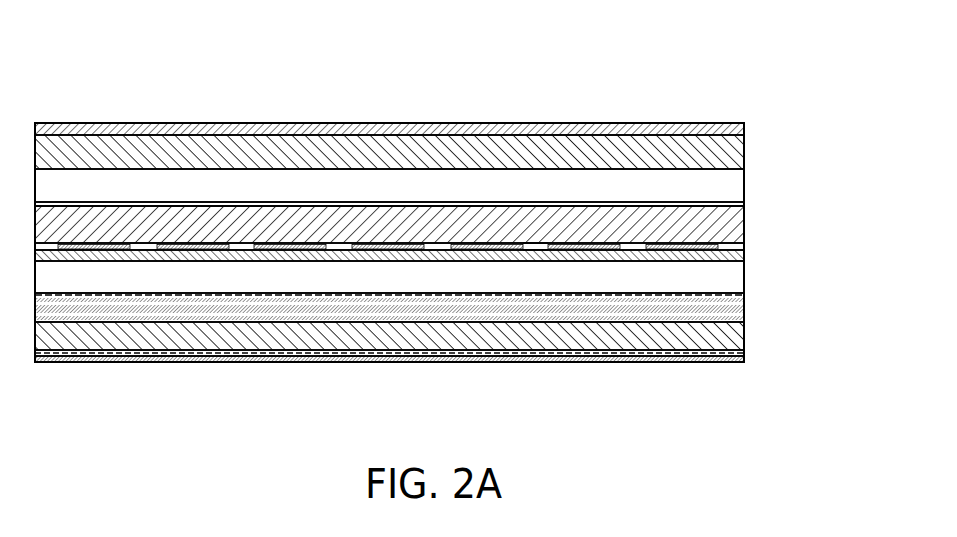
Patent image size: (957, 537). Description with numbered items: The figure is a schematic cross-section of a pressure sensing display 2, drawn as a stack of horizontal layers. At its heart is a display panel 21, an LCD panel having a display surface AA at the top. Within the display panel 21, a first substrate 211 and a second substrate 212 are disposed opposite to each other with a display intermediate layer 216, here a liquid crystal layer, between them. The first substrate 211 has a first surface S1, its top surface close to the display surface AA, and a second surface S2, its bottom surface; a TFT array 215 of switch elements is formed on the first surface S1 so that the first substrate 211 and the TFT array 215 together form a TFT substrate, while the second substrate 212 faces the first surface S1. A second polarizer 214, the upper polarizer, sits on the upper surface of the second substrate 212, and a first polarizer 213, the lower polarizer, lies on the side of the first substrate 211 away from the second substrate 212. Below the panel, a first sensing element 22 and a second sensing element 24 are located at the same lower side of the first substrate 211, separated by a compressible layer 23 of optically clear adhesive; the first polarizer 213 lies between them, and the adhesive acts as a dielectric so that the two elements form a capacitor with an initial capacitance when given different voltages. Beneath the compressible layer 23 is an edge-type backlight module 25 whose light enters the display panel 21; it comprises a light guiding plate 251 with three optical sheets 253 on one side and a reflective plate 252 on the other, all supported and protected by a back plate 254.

The pressure sensing display 2 is at (150, 57).
The display panel 21 is at (810, 110).
The second polarizer 214 is at (744, 128).
The second substrate 212 is at (744, 153).
The display intermediate layer 216 is at (727, 182).
The TFT array 215 is at (744, 205).
The first substrate 211 is at (736, 226).
The first polarizer 213 is at (744, 255).
The first sensing element 22 is at (483, 250).
The first surface S1 is at (491, 207).
The second surface S2 is at (538, 251).
The compressible layer 23 is at (725, 278).
The second sensing element 24 is at (600, 296).
The backlight module 25 is at (809, 300).
The optical sheets 253 is at (747, 297).
The light guiding plate 251 is at (744, 338).
The reflective plate 252 is at (744, 357).
The back plate 254 is at (727, 363).
The display surface AA is at (601, 122).